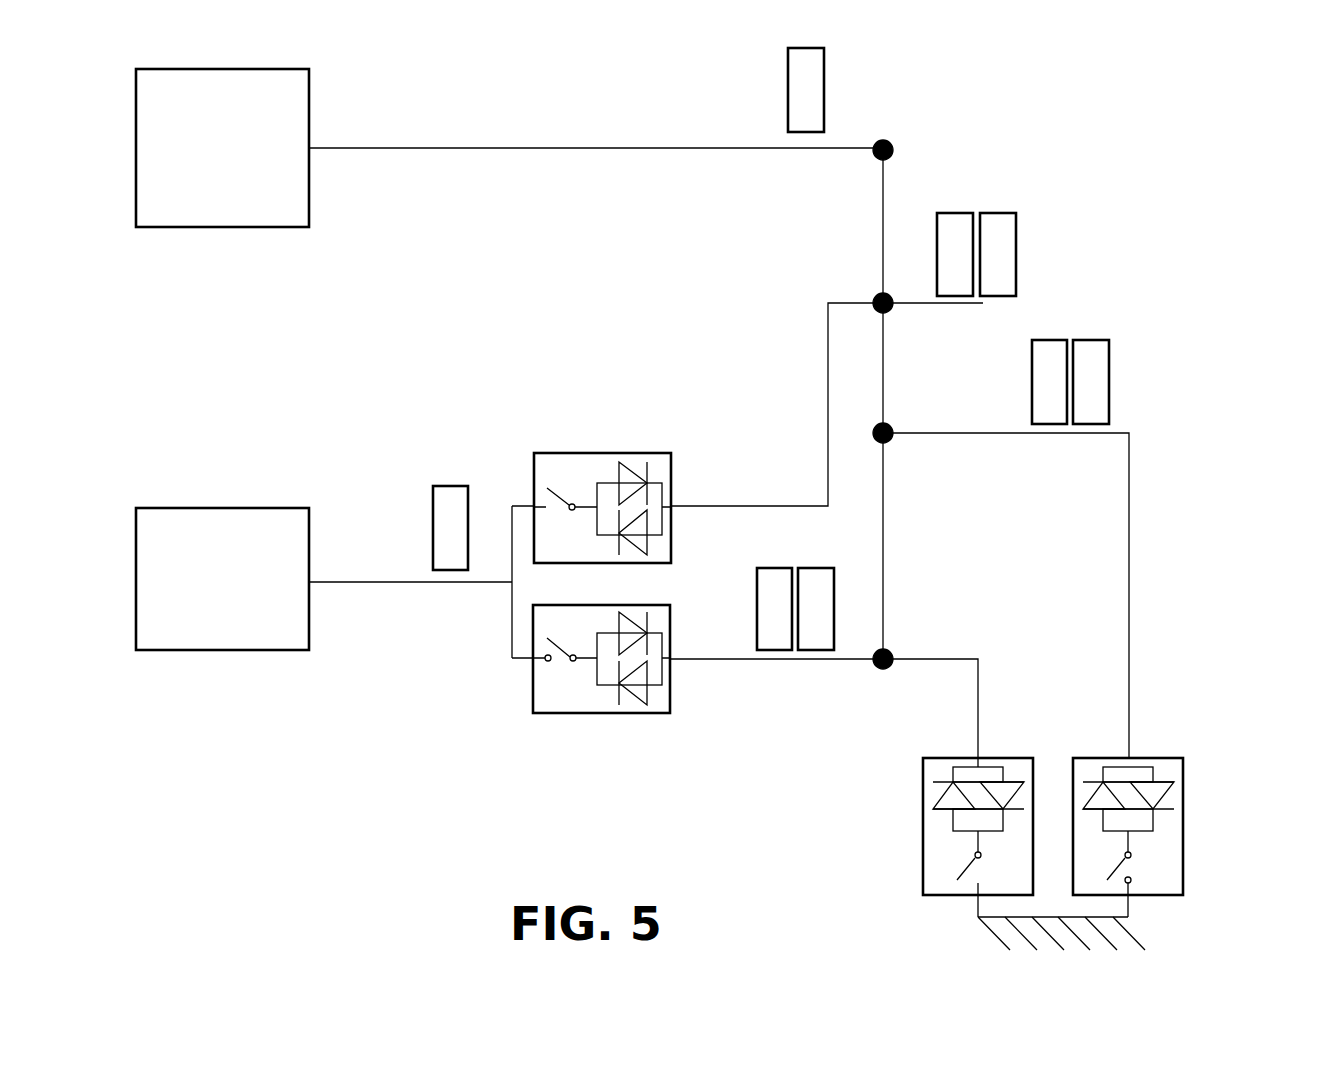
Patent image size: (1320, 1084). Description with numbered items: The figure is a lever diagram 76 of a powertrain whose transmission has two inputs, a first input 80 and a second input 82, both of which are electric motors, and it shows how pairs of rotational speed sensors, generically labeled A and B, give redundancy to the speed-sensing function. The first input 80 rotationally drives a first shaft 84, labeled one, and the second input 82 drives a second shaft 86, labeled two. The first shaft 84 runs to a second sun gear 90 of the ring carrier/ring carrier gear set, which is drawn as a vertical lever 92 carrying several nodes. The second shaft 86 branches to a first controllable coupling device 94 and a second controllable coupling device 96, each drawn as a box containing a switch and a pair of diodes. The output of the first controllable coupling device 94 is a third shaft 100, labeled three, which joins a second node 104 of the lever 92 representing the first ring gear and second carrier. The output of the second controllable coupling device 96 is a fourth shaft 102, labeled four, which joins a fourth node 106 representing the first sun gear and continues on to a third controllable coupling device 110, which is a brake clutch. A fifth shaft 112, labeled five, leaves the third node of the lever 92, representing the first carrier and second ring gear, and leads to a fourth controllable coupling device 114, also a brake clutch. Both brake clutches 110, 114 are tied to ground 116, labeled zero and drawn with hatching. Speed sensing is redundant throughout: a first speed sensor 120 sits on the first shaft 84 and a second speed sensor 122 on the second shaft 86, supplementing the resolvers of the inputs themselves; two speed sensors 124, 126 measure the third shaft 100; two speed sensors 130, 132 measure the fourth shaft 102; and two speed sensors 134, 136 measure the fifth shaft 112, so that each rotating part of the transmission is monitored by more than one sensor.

The lever diagram 76 is at (457, 770).
The first input 80 is at (228, 227).
The second input 82 is at (210, 508).
The first shaft 84 is at (528, 148).
The second shaft 86 is at (380, 582).
The second sun gear 90 is at (882, 141).
The lever 92 is at (883, 584).
The first controllable coupling device 94 is at (557, 453).
The second controllable coupling device 96 is at (648, 713).
The third shaft 100 is at (828, 403).
The fourth shaft 102 is at (727, 660).
The second node 104 is at (880, 296).
The fourth node 106 is at (876, 667).
The third controllable coupling device 110 is at (923, 862).
The fifth shaft 112 is at (890, 425).
The fourth controllable coupling device 114 is at (1183, 777).
The ground 116 is at (1105, 918).
The first speed sensor 120 is at (788, 97).
The second speed sensor 122 is at (450, 486).
The speed sensor 124 is at (953, 213).
The speed sensor 126 is at (997, 213).
The speed sensor 130 is at (775, 568).
The speed sensor 132 is at (815, 568).
The speed sensor 134 is at (1047, 340).
The speed sensor 136 is at (1090, 340).